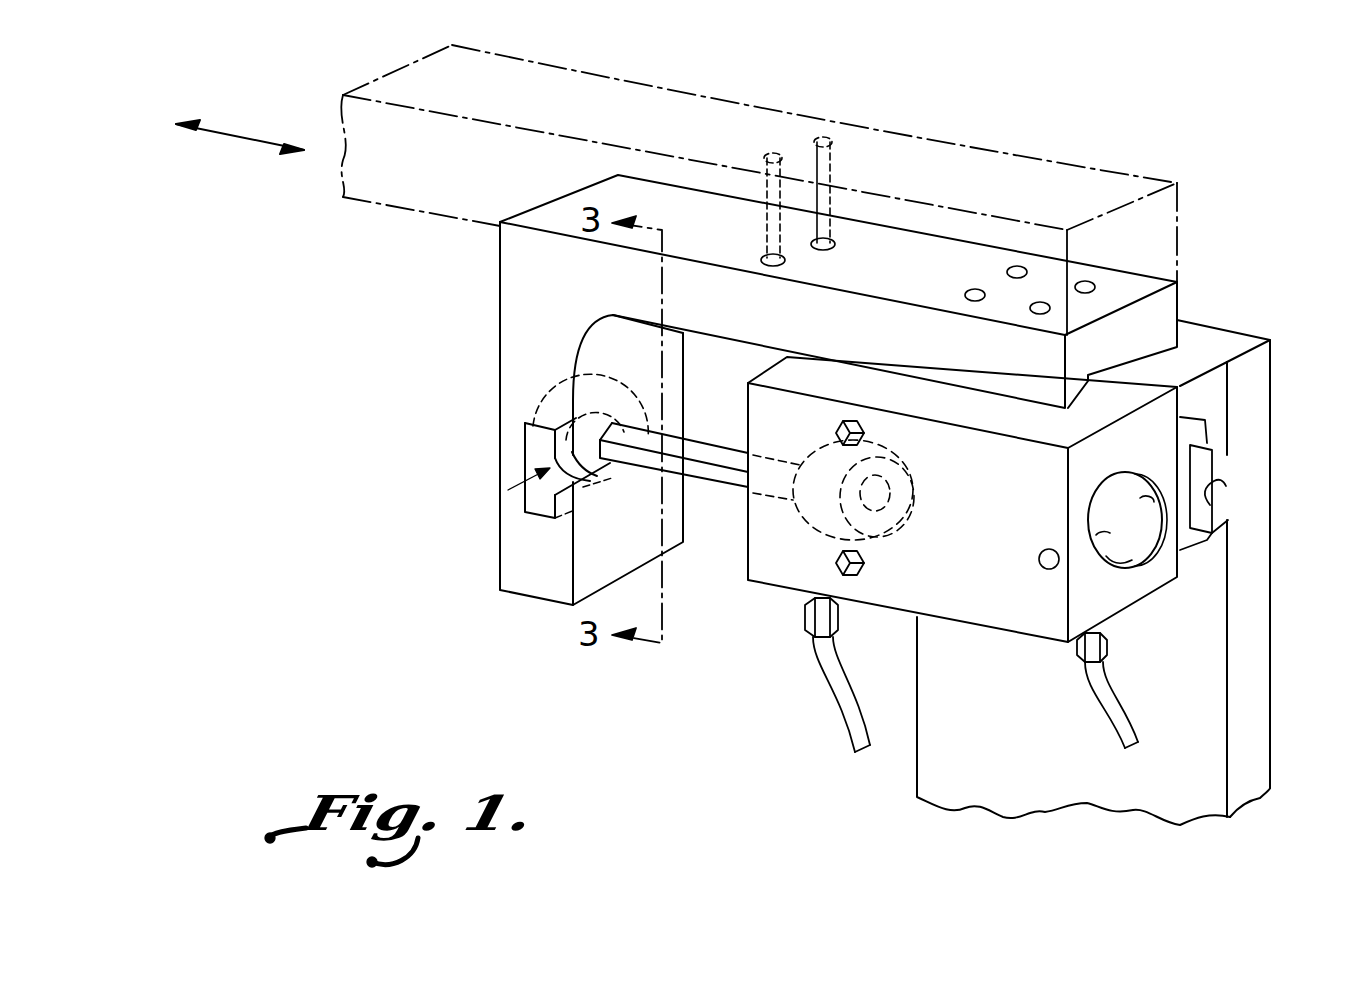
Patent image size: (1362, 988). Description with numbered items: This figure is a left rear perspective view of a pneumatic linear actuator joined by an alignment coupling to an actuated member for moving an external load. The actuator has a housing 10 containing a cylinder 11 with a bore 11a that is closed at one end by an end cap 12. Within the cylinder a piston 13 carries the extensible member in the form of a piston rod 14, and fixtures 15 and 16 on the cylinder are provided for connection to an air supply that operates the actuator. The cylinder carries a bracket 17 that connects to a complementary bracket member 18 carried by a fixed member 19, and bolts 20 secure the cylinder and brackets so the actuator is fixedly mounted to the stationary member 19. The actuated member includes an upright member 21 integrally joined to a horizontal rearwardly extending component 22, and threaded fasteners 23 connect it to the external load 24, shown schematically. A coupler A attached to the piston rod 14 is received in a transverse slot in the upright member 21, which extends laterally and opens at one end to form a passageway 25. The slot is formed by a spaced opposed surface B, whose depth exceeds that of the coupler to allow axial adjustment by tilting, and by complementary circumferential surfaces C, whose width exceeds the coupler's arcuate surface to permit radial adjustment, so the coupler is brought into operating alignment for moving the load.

The linear actuator housing 10 is at (937, 567).
The cylinder 11 is at (1153, 577).
The bore 11a is at (1122, 560).
The end cap 12 is at (1113, 493).
The piston 13 is at (913, 497).
The piston rod 14 is at (720, 467).
The fixture 15 is at (810, 618).
The fixture 16 is at (1080, 653).
The bracket 17 is at (1217, 557).
The complementary bracket member 18 is at (1205, 502).
The fixed member 19 is at (1252, 697).
The bolts 20 is at (840, 428).
The upright member 21 is at (543, 577).
The horizontal rearwardly extending component 22 is at (1163, 300).
The threaded fasteners 23 is at (777, 150).
The external load 24 is at (630, 78).
The passageway 25 is at (540, 458).
The coupler A is at (633, 400).
The opposed surface B is at (530, 438).
The circumferential surface C is at (527, 447).